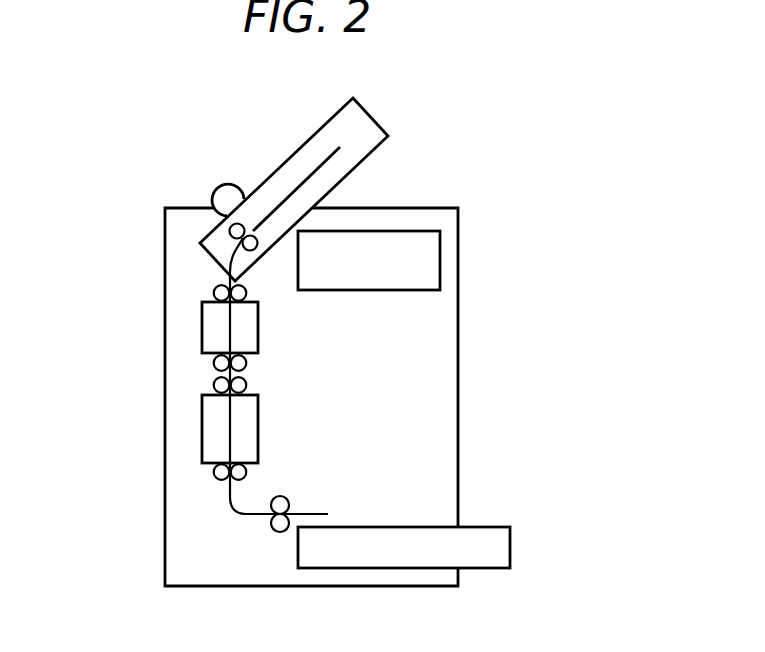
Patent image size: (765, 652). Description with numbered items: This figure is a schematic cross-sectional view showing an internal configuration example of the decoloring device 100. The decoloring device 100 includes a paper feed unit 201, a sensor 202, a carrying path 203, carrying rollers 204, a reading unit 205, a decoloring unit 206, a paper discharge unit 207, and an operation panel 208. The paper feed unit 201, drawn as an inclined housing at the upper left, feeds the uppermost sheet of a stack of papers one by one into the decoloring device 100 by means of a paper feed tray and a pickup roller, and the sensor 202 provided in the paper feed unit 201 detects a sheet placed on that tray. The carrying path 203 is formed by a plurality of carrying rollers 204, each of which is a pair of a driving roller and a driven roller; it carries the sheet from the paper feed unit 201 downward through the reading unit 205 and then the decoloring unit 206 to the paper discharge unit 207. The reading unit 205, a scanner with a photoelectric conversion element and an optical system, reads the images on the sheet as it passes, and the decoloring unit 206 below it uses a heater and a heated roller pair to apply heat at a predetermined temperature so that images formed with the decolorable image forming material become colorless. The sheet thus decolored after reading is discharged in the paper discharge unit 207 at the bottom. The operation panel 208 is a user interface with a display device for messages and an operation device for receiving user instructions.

The decoloring device 100 is at (478, 181).
The paper feed unit 201 is at (375, 117).
The sensor 202 is at (226, 184).
The carrying path 203 is at (307, 178).
The carrying rollers 204 is at (230, 232).
The reading unit 205 is at (260, 325).
The decoloring unit 206 is at (260, 427).
The paper discharge unit 207 is at (488, 525).
The operation panel 208 is at (440, 260).